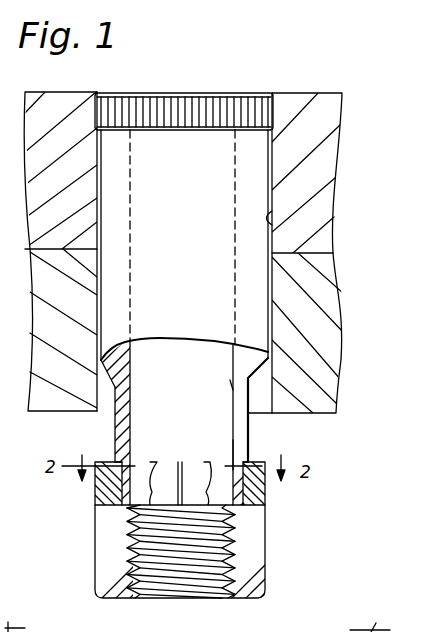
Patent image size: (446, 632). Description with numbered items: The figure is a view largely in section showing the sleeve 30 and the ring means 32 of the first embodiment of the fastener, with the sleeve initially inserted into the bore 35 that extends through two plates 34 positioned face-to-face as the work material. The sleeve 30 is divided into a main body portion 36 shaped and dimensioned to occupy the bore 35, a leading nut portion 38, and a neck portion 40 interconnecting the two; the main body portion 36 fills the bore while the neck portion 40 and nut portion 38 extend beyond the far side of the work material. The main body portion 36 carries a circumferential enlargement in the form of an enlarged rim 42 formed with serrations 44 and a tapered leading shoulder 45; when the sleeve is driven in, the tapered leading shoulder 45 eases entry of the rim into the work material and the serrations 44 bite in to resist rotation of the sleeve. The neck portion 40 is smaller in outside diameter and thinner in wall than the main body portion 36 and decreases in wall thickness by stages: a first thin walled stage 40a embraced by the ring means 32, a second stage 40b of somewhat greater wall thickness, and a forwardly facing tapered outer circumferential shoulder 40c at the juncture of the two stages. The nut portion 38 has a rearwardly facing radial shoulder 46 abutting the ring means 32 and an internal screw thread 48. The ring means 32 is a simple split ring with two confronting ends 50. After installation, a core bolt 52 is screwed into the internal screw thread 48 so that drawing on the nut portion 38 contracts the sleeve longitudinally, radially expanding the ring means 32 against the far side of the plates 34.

The sleeve 30 is at (196, 257).
The ring means 32 is at (266, 498).
The plates 34 is at (316, 172).
The bore 35 is at (272, 218).
The main body portion 36 is at (258, 295).
The nut portion 38 is at (253, 567).
The neck portion 40 is at (260, 433).
The first thin walled stage 40a is at (232, 470).
The second stage 40b is at (233, 389).
The tapered outer circumferential shoulder 40c is at (252, 460).
The enlarged rim 42 is at (268, 108).
The serrations 44 is at (188, 100).
The tapered leading shoulder 45 is at (186, 134).
The rearwardly facing radial shoulder 46 is at (256, 510).
The internal screw thread 48 is at (177, 575).
The confronting ends 50 is at (197, 470).
The core bolt 52 is at (165, 374).